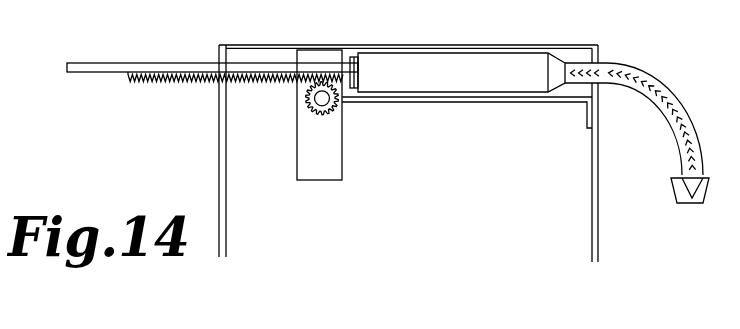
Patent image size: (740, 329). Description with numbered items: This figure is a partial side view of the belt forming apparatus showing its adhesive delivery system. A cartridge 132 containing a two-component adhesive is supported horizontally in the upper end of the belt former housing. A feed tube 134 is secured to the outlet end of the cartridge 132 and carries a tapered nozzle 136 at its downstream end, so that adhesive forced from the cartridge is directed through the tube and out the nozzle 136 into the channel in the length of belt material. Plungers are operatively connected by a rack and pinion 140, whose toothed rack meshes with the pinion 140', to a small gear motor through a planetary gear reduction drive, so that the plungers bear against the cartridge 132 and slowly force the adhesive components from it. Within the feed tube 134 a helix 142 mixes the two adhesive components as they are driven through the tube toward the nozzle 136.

The cartridge 132 is at (509, 63).
The feed tube 134 is at (648, 75).
The tapered nozzle 136 is at (672, 197).
The rack and pinion 140 is at (212, 113).
The pinion gear 140' is at (367, 121).
The helix 142 is at (685, 127).